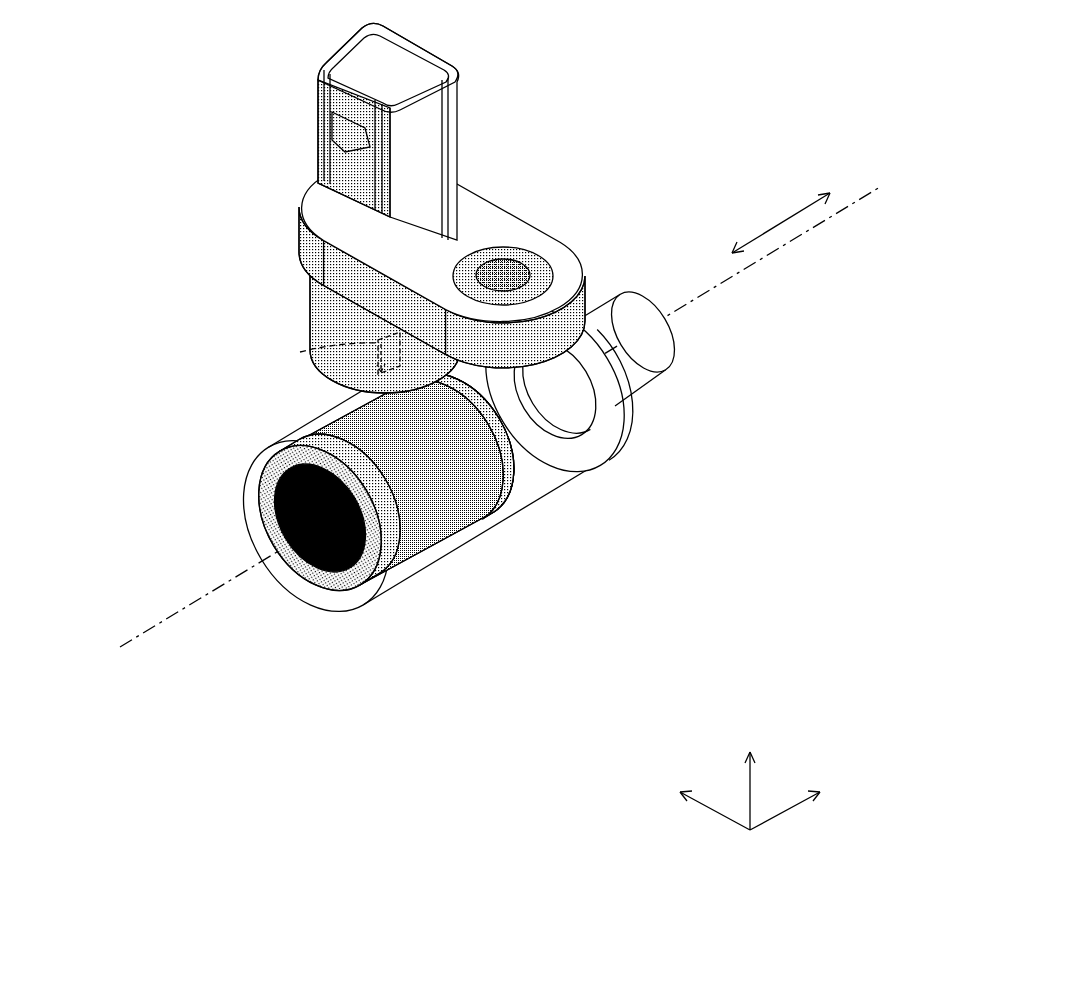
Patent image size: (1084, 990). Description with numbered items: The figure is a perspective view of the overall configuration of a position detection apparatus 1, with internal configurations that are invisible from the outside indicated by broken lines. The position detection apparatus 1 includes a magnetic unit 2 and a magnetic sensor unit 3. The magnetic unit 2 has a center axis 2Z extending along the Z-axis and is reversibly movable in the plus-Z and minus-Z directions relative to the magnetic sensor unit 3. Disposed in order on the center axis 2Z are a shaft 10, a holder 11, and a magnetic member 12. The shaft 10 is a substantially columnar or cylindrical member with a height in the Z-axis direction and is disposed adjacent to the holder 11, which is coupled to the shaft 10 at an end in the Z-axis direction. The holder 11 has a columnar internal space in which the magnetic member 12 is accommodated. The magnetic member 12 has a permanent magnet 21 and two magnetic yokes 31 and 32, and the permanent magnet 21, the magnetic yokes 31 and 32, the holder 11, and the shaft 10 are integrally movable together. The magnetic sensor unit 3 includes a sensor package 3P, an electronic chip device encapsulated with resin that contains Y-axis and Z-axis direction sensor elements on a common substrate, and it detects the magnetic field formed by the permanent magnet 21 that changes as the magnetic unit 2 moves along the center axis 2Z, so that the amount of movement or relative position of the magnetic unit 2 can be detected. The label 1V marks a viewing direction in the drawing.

The position detection apparatus 1 is at (690, 113).
The magnetic unit 2 is at (728, 566).
The center axis 2Z is at (170, 617).
The magnetic sensor unit 3 is at (283, 259).
The sensor package 3P is at (300, 352).
The shaft 10 is at (632, 377).
The holder 11 is at (610, 433).
The magnetic member 12 is at (654, 538).
The permanent magnet 21 is at (430, 513).
The magnetic yoke 31 is at (387, 550).
The magnetic yoke 32 is at (510, 512).
The viewing direction 1V is at (267, 478).